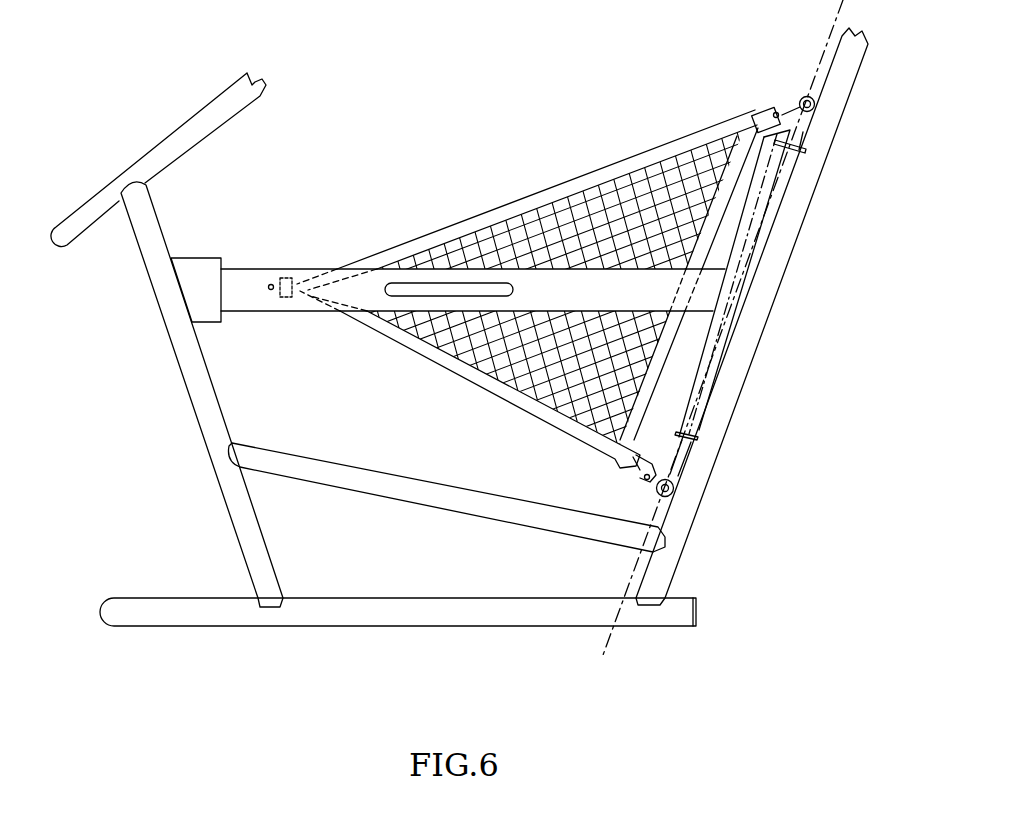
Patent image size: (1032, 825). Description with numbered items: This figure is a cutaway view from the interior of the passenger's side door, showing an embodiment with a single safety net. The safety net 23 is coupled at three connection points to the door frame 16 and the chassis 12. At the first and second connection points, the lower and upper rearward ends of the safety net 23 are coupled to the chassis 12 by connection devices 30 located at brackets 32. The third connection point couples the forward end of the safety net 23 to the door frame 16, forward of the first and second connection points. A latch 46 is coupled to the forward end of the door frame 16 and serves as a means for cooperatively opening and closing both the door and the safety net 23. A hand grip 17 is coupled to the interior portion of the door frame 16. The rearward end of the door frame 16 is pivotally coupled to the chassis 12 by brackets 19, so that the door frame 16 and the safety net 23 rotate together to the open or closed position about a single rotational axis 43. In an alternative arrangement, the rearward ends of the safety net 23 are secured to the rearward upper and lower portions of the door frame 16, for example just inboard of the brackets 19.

The chassis 12 is at (150, 250).
The door frame 16 is at (242, 302).
The hand grip 17 is at (420, 290).
The brackets 19 is at (806, 146).
The safety net 23 is at (511, 172).
The connection devices 30 is at (760, 108).
The brackets 32 is at (800, 97).
The rotational axis 43 is at (608, 643).
The latch 46 is at (197, 268).